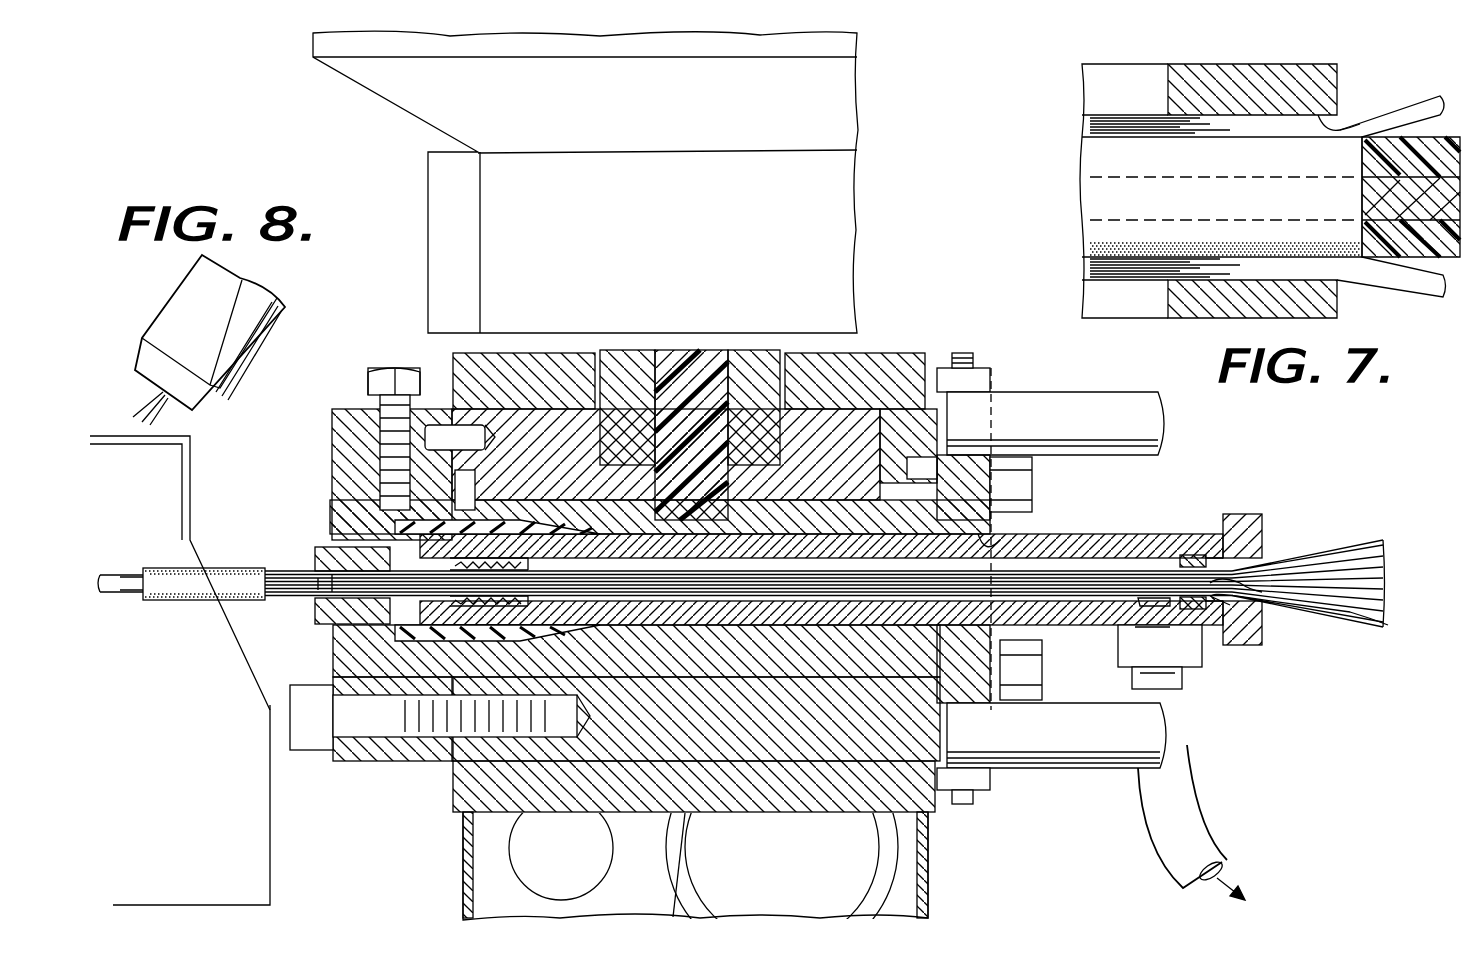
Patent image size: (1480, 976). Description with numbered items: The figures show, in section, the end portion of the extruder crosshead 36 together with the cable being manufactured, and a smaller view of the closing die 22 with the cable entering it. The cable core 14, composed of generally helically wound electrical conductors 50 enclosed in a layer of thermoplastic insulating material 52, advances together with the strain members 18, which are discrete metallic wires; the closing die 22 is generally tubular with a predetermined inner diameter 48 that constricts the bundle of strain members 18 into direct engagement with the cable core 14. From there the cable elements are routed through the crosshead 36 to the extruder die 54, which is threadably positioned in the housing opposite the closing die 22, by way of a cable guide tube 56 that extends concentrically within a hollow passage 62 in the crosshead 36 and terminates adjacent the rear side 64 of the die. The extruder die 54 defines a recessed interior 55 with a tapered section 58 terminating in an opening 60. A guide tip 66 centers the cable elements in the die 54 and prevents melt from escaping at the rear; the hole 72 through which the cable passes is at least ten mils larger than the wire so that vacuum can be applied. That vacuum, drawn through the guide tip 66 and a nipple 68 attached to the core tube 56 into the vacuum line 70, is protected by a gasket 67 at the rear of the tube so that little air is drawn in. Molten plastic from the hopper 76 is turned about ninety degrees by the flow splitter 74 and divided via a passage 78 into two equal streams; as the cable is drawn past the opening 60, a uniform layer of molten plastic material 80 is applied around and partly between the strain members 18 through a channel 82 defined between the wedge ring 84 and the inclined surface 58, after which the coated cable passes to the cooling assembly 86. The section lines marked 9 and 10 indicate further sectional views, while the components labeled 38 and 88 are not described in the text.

In FIG. 8, the section line 9- 9 is at (672, 520).
In FIG. 8, the section line 10- 10 is at (218, 532).
In FIG. 8, the cable core 14 is at (112, 578).
In FIG. 7, the cable core 14 is at (1090, 213).
In FIG. 8, the strain members 18 is at (120, 592).
In FIG. 7, the strain members 18 is at (1428, 100).
In FIG. 8, the closing die 22 is at (1272, 521).
In FIG. 7, the closing die 22 is at (1288, 66).
In FIG. 8, the extruder crosshead 36 is at (900, 347).
In FIG. 8, the tubes 38 is at (1115, 412).
In FIG. 8, the inner diameter 48 is at (1245, 585).
In FIG. 7, the inner diameter 48 is at (1332, 122).
In FIG. 7, the electrical conductors 50 is at (1385, 208).
In FIG. 7, the layer of thermoplastic insulating material 52 is at (1425, 250).
In FIG. 8, the extruder die 54 is at (505, 608).
In FIG. 8, the recessed interior 55 is at (520, 568).
In FIG. 8, the cable guide tube 56 is at (1100, 534).
In FIG. 8, the tapered section 58 is at (395, 522).
In FIG. 8, the opening 60 is at (352, 627).
In FIG. 8, the hollow passage 62 is at (1000, 534).
In FIG. 8, the rear side 64 is at (455, 643).
In FIG. 8, the guide tip 66 is at (330, 549).
In FIG. 8, the gasket 67 is at (1192, 553).
In FIG. 8, the nipple 68 is at (1178, 656).
In FIG. 8, the vacuum line 70 is at (1148, 604).
In FIG. 8, the hole 72 is at (322, 592).
In FIG. 8, the flow splitter 74 is at (567, 450).
In FIG. 8, the hopper 76 is at (693, 360).
In FIG. 8, the passage 78 is at (605, 570).
In FIG. 8, the layer of molten plastic material 80 is at (276, 568).
In FIG. 8, the channel 82 is at (440, 717).
In FIG. 8, the wedge ring 84 is at (392, 492).
In FIG. 8, the cooling assembly 86 is at (248, 882).
In FIG. 8, the plate 88 is at (185, 482).